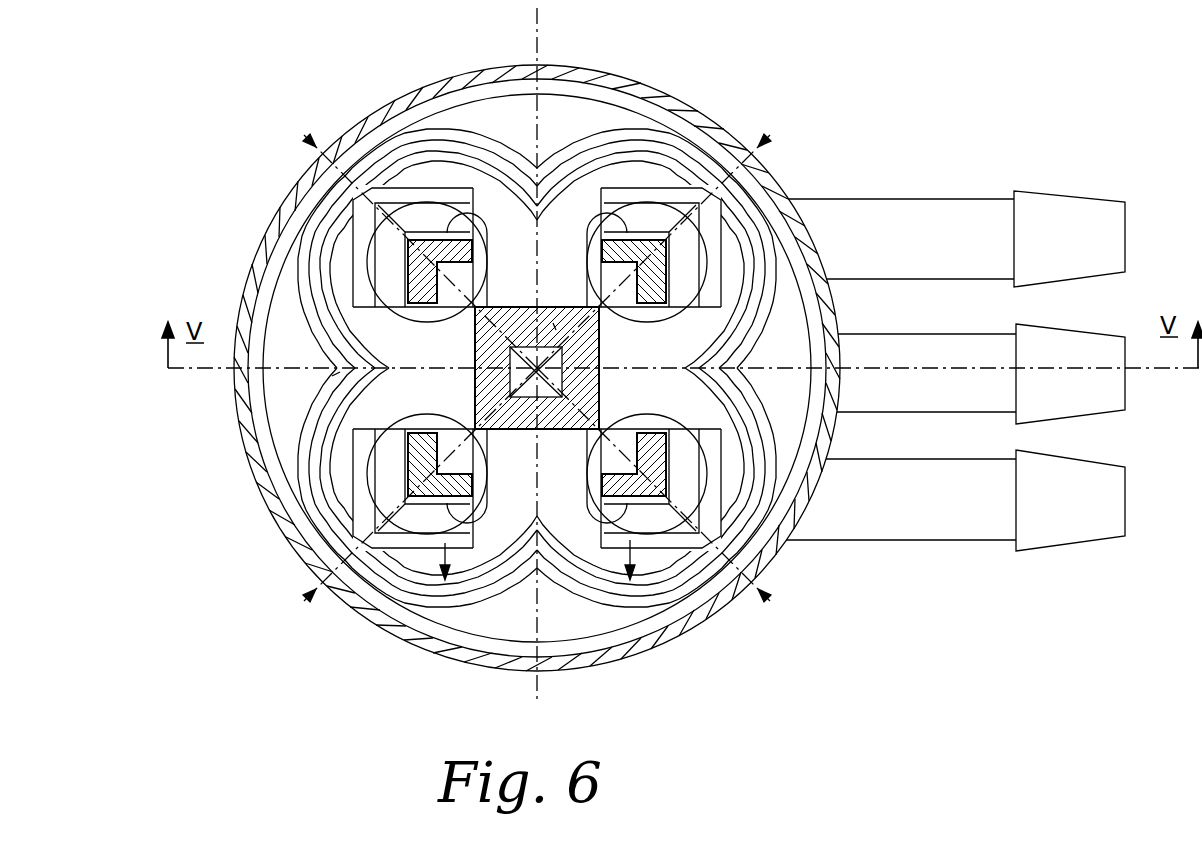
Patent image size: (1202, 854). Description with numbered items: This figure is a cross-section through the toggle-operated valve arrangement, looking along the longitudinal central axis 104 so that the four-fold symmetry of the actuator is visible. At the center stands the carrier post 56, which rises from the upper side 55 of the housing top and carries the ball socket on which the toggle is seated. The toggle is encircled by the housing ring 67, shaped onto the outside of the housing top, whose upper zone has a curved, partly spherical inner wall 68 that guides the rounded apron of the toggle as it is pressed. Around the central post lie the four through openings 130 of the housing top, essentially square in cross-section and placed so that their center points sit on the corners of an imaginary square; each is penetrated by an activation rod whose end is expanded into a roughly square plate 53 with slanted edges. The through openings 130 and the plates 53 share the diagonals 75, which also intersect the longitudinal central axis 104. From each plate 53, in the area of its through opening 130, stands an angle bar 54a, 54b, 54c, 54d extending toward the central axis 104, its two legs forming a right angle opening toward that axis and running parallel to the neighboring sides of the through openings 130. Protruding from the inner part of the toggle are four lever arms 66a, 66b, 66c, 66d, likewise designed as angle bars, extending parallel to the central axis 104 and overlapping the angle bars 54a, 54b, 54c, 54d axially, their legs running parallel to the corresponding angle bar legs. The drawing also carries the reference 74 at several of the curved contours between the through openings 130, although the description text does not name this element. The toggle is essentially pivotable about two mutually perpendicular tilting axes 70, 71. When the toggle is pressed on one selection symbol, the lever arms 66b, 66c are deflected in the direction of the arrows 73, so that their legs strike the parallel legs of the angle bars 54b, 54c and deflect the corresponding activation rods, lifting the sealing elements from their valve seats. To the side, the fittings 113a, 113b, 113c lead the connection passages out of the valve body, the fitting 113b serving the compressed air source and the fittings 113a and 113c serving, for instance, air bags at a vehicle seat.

The plate 53 is at (480, 268).
The angle bar 54a is at (345, 235).
The angle bar 54b is at (477, 520).
The angle bar 54c is at (675, 430).
The angle bar 54d is at (600, 268).
The upper side of the housing top 55 is at (332, 376).
The carrier post 56 is at (538, 428).
The lever arm 66a is at (410, 272).
The lever arm 66b is at (470, 443).
The lever arm 66c is at (602, 485).
The lever arm 66d is at (602, 268).
The housing ring 67 is at (778, 196).
The inner wall 68 is at (772, 182).
The tilting axis 70 is at (548, 20).
The tilting axis 71 is at (880, 368).
The arrows 73 is at (475, 560).
The pole piece 74 is at (465, 188).
The diagonals 75 is at (314, 145).
The longitudinal central axis 104 is at (553, 325).
The fitting 113a is at (1033, 217).
The fitting 113b is at (1050, 349).
The fitting 113c is at (1069, 536).
The through opening 130 is at (673, 200).